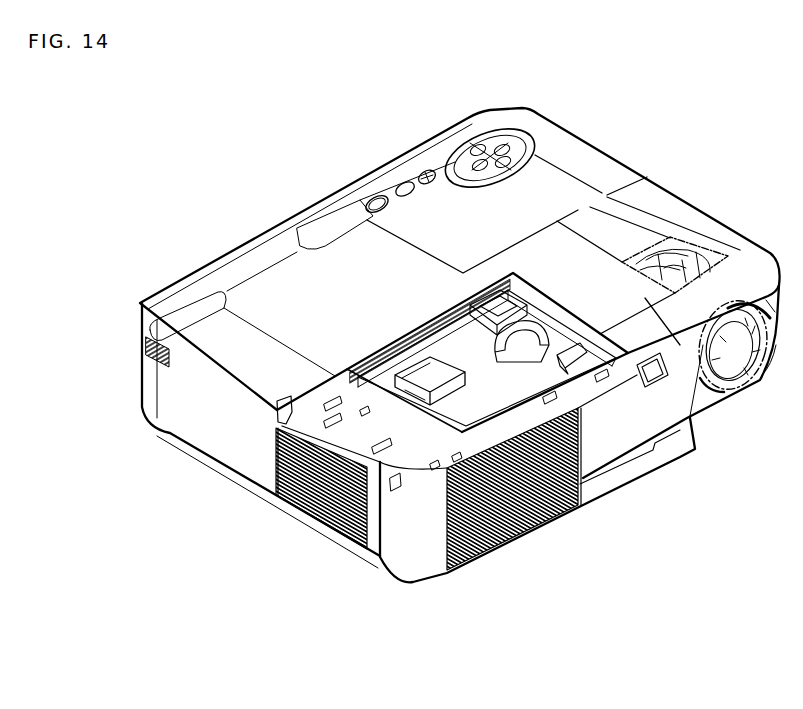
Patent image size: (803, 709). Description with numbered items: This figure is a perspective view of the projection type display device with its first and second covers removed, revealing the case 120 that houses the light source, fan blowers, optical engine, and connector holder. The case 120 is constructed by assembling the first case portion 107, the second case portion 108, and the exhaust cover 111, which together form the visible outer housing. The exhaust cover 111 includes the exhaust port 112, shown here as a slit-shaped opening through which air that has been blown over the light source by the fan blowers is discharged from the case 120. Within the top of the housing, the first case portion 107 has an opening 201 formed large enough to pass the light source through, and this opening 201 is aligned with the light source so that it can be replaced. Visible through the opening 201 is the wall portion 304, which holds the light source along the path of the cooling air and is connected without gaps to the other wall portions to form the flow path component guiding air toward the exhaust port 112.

The first case portion 107 is at (260, 305).
The second case portion 108 is at (197, 462).
The exhaust cover 111 is at (413, 530).
The exhaust port 112 is at (500, 513).
The case 120 is at (101, 458).
The opening 201 is at (516, 408).
The wall portion 304 is at (482, 357).